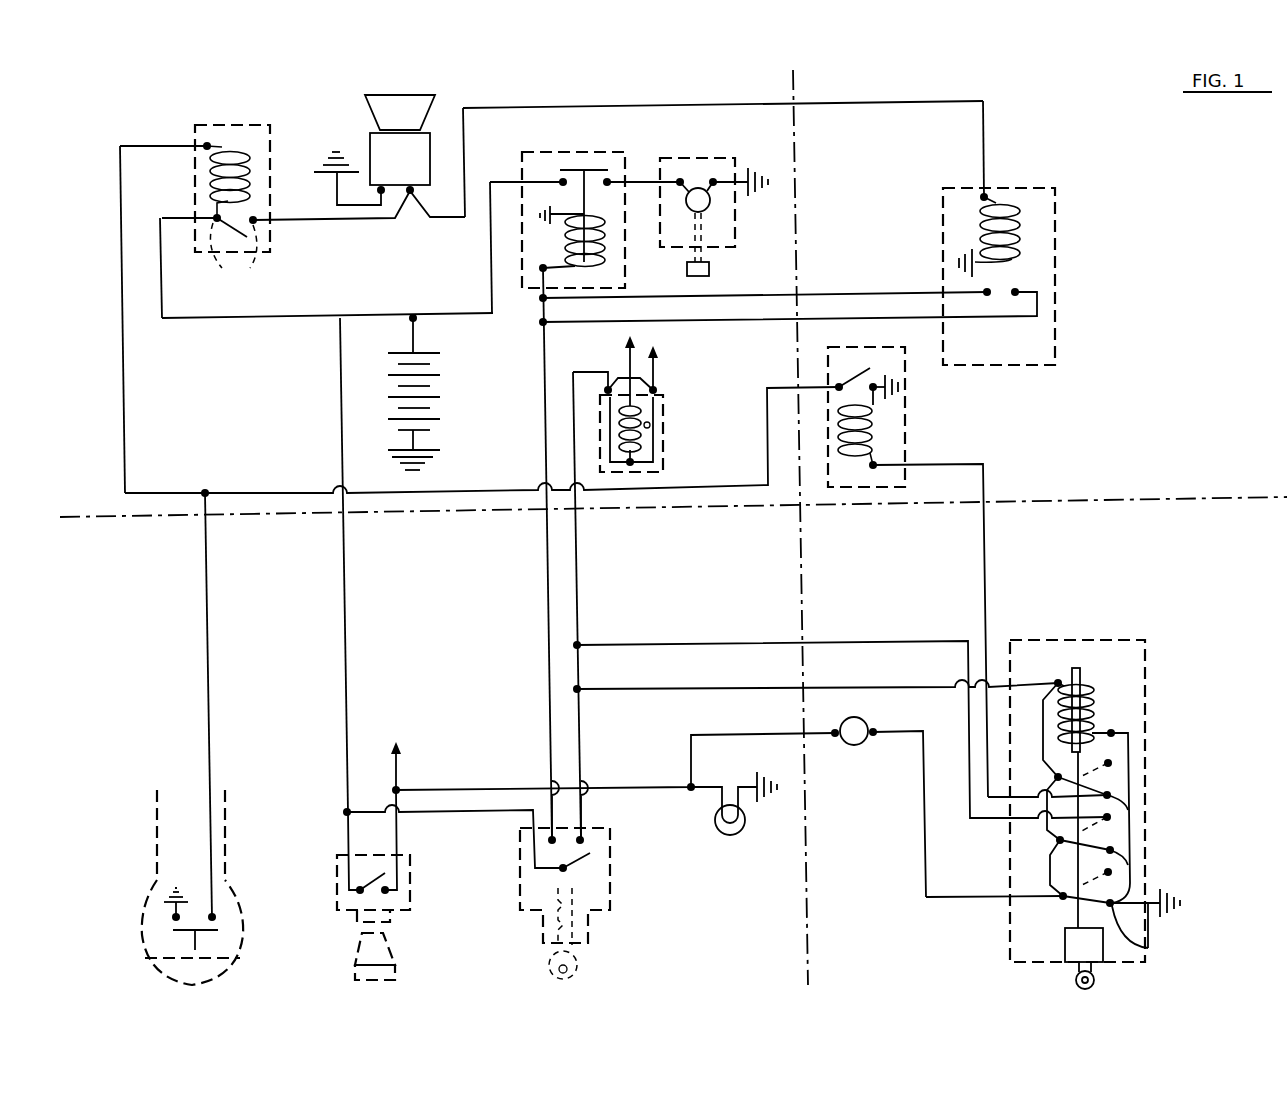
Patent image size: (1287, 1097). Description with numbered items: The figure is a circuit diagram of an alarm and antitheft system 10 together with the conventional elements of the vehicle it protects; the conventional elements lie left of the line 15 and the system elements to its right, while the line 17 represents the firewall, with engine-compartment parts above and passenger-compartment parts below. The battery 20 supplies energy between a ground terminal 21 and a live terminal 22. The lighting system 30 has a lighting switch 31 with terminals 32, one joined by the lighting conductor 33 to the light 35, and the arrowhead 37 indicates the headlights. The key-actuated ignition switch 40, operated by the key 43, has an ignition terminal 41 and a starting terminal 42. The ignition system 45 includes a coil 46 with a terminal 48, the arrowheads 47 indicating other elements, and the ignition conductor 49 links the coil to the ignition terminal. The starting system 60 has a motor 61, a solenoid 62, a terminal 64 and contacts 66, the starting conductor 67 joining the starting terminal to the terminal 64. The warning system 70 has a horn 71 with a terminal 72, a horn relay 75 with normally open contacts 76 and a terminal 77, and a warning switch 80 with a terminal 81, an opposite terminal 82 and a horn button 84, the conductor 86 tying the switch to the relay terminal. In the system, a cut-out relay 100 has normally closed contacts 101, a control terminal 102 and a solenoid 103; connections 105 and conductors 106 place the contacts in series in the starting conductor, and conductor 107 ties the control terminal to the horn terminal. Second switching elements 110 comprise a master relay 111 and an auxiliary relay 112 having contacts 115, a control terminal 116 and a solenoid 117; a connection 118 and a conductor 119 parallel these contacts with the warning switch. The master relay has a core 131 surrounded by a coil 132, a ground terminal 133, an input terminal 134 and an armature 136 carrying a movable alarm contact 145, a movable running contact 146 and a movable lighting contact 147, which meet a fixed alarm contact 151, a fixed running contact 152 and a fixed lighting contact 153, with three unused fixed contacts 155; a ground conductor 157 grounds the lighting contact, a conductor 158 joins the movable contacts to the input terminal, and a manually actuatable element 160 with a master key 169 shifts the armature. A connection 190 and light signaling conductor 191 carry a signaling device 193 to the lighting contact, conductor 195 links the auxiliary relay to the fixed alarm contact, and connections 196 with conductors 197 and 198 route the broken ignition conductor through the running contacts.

The alarm and antitheft system 10 is at (1066, 122).
The line 15 is at (802, 78).
The line 17 is at (1208, 497).
The battery 20 is at (437, 395).
The ground terminal 21 is at (430, 462).
The live terminal 22 is at (413, 314).
The lighting system 30 is at (406, 784).
The lighting switch 31 is at (410, 878).
The terminals 32 is at (383, 893).
The lighting conductor 33 is at (636, 789).
The light 35 is at (720, 832).
The arrowhead 37 is at (392, 758).
The ignition switch 40 is at (612, 900).
The ignition terminal 41 is at (583, 840).
The starting terminal 42 is at (554, 838).
The key 43 is at (580, 962).
The ignition system 45 is at (673, 417).
The coil 46 is at (642, 438).
The arrowheads 47 is at (633, 348).
The terminal 48 is at (605, 392).
The ignition conductor 49 is at (575, 689).
The starting system 60 is at (788, 212).
The motor 61 is at (703, 210).
The solenoid 62 is at (603, 244).
The terminal 64 is at (543, 265).
The contacts 66 is at (607, 180).
The starting conductor 67 is at (541, 300).
The warning system 70 is at (270, 98).
The horn 71 is at (413, 93).
The terminal 72 is at (410, 195).
The horn relay 75 is at (183, 182).
The contacts 76 is at (253, 260).
The terminal 77 is at (204, 144).
The warning switch 80 is at (175, 931).
The terminal 81 is at (174, 915).
The opposite terminal 82 is at (216, 917).
The horn button 84 is at (160, 970).
The conductor 86 is at (206, 541).
The cut-out relay 100 is at (1070, 190).
The contacts 101 is at (990, 290).
The control terminal 102 is at (984, 196).
The solenoid 103 is at (1012, 240).
The connections 105 is at (546, 300).
The conductors 106 is at (908, 318).
The conductor 107 is at (920, 102).
The second switching elements 110 is at (895, 587).
The master relay 111 is at (1163, 637).
The auxiliary relay 112 is at (915, 490).
The contacts 115 is at (873, 384).
The control terminal 116 is at (876, 463).
The solenoid 117 is at (876, 418).
The connection 118 is at (205, 490).
The conductor 119 is at (270, 493).
The core 131 is at (1076, 667).
The solenoid coil 132 is at (1086, 698).
The ground terminal 133 is at (1114, 732).
The input terminal 134 is at (1057, 680).
The armature 136 is at (1078, 912).
The movable alarm contact 145 is at (1110, 794).
The movable running contact 146 is at (1113, 850).
The movable lighting contact 147 is at (1132, 882).
The fixed alarm contact 151 is at (1112, 815).
The fixed running contact 152 is at (1112, 821).
The fixed lighting contact 153 is at (1148, 949).
The unused fixed contacts 155 is at (1111, 763).
The ground conductor 157 is at (1165, 915).
The conductor 158 is at (1056, 779).
The manually actuatable element 160 is at (1063, 945).
The master key 169 is at (1075, 980).
The connection 190 is at (689, 785).
The light signaling conductor 191 is at (918, 775).
The signaling device 193 is at (867, 722).
The conductor 195 is at (983, 520).
The connections 196 is at (580, 648).
The conductor 197 is at (700, 688).
The conductor 198 is at (682, 641).